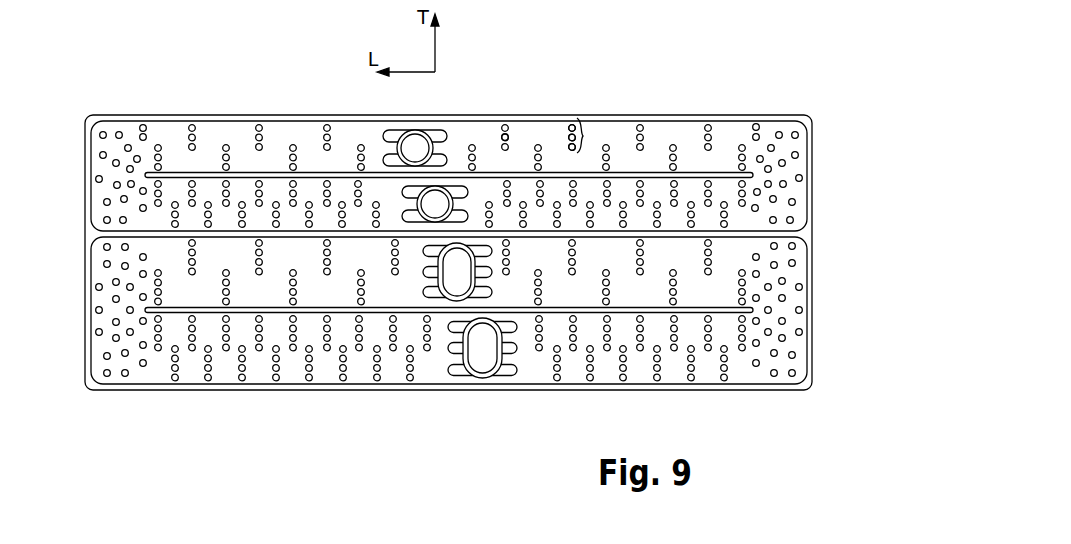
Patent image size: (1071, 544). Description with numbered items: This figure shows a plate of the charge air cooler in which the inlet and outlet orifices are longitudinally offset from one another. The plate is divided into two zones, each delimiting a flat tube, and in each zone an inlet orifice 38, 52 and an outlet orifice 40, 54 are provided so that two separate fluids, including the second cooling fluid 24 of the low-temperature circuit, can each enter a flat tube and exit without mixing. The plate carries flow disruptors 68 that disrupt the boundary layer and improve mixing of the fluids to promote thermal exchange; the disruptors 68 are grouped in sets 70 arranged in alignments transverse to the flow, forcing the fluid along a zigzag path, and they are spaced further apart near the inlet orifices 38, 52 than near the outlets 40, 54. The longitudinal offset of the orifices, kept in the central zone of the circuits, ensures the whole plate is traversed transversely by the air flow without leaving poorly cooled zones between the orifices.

The second cooling fluid 24 is at (705, 88).
The inlet orifice 38 is at (418, 152).
The outlet orifice 40 is at (430, 203).
The inlet orifice 52 is at (455, 272).
The outlet orifice 54 is at (478, 353).
The flow disruptors 68 is at (506, 137).
The sets of disruptors 70 is at (587, 136).